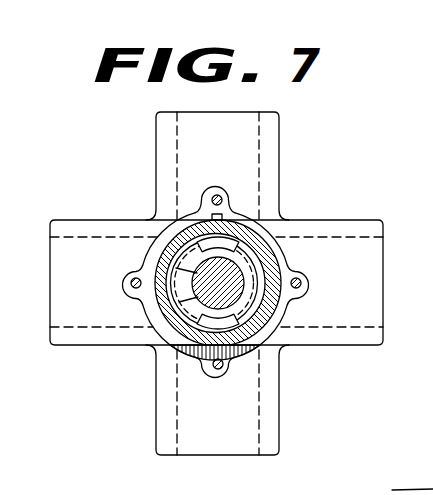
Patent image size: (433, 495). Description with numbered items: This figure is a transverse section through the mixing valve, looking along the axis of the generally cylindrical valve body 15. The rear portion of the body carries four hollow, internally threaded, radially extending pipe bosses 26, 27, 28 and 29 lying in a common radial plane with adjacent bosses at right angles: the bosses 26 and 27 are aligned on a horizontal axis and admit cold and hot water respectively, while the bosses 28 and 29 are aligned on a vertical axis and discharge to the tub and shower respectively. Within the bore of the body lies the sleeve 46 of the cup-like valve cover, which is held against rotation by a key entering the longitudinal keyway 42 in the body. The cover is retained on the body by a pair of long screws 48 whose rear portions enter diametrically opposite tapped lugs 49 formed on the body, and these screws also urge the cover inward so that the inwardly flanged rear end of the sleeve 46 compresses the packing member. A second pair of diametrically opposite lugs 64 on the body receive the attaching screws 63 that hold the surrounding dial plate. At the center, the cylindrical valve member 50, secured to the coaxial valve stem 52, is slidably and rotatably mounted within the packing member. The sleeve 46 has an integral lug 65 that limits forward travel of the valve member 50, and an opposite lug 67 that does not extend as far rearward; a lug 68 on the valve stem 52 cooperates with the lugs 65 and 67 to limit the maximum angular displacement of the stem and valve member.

The valve body 15 is at (267, 234).
The pipe boss 26 is at (367, 277).
The pipe boss 27 is at (82, 255).
The pipe boss 28 is at (235, 442).
The pipe boss 29 is at (232, 128).
The keyway 42 is at (212, 214).
The sleeve 46 is at (253, 342).
The screws 48 is at (134, 269).
The tapped lugs 49 is at (302, 298).
The valve member 50 is at (244, 266).
The valve stem 52 is at (237, 292).
The attaching screws 63 is at (217, 195).
The lugs 64 is at (206, 364).
The lug 65 is at (173, 346).
The lug 67 is at (173, 238).
The lug 68 is at (178, 288).